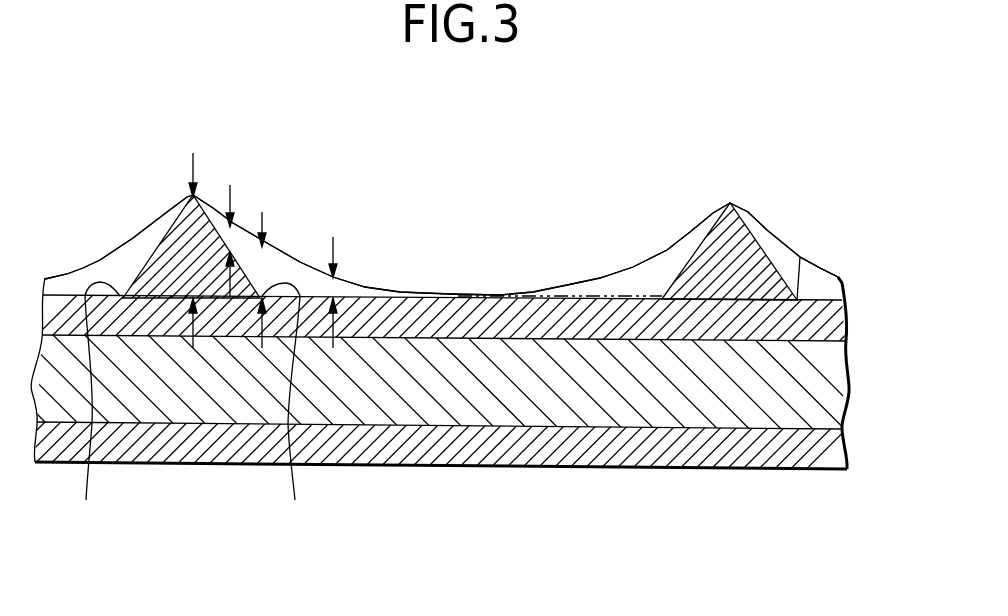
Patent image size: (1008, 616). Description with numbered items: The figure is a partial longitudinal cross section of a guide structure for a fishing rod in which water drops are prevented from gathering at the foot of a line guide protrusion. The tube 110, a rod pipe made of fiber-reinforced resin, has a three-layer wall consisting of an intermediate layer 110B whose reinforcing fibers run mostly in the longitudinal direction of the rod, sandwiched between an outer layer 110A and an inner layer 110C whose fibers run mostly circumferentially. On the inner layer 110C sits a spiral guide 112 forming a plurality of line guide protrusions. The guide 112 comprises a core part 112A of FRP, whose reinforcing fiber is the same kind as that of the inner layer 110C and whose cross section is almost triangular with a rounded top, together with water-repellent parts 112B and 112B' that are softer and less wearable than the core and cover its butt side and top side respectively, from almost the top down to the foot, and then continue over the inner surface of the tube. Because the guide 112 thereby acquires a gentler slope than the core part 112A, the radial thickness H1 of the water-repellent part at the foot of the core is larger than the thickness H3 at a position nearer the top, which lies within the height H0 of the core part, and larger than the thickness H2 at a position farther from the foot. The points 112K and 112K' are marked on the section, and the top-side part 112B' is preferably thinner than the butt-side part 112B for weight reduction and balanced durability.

The tube 110 is at (848, 546).
The outer layer 110A is at (808, 450).
The intermediate layer 110B is at (717, 398).
The inner layer 110C is at (618, 317).
The spiral guide 112 is at (872, 118).
The core part 112A is at (732, 205).
The water-repellent part (butt side) 112B is at (455, 211).
The water-repellent part (top side) 112B' is at (369, 313).
The film edge point 112K is at (843, 255).
The reference film edge line 112K' is at (560, 238).
The height of the core part H0 is at (197, 237).
The thickness of the water-repellent part at the foot H1 is at (270, 266).
The thickness of the water-repellent part farther from the foot H2 is at (333, 279).
The thickness of the water-repellent part nearer the top H3 is at (231, 227).